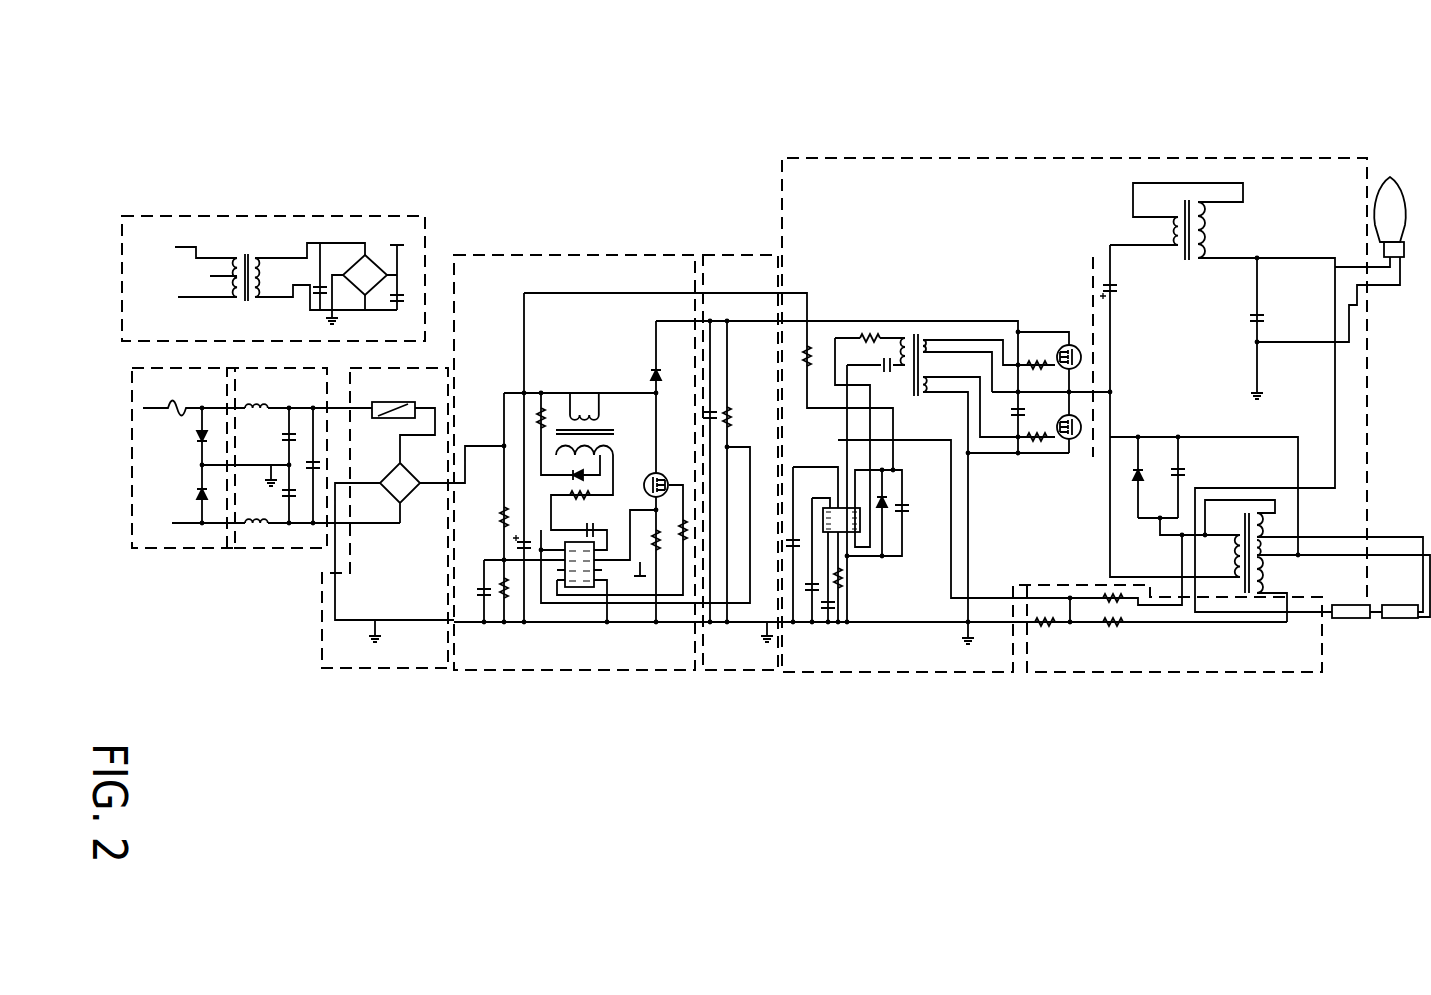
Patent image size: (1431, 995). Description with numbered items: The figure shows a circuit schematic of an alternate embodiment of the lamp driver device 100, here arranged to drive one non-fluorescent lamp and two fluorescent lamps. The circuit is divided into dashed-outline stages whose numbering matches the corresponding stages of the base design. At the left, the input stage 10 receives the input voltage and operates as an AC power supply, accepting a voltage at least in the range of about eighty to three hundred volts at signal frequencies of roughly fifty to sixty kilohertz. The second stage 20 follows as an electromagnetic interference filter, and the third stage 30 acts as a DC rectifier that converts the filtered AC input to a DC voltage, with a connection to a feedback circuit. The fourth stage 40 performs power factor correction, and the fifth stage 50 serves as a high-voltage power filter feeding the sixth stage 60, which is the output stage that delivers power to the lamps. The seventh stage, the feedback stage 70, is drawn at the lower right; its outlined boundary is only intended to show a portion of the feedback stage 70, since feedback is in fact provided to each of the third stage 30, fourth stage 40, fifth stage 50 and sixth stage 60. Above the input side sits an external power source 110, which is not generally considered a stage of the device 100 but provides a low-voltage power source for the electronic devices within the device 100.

The device 100 is at (490, 84).
The external power source 110 is at (302, 193).
The input stage 10 is at (188, 566).
The second stage 20 is at (282, 566).
The third stage 30 is at (395, 692).
The fourth stage 40 is at (568, 692).
The fifth stage 50 is at (738, 692).
The sixth stage 60 is at (906, 692).
The feedback stage 70 is at (1180, 692).